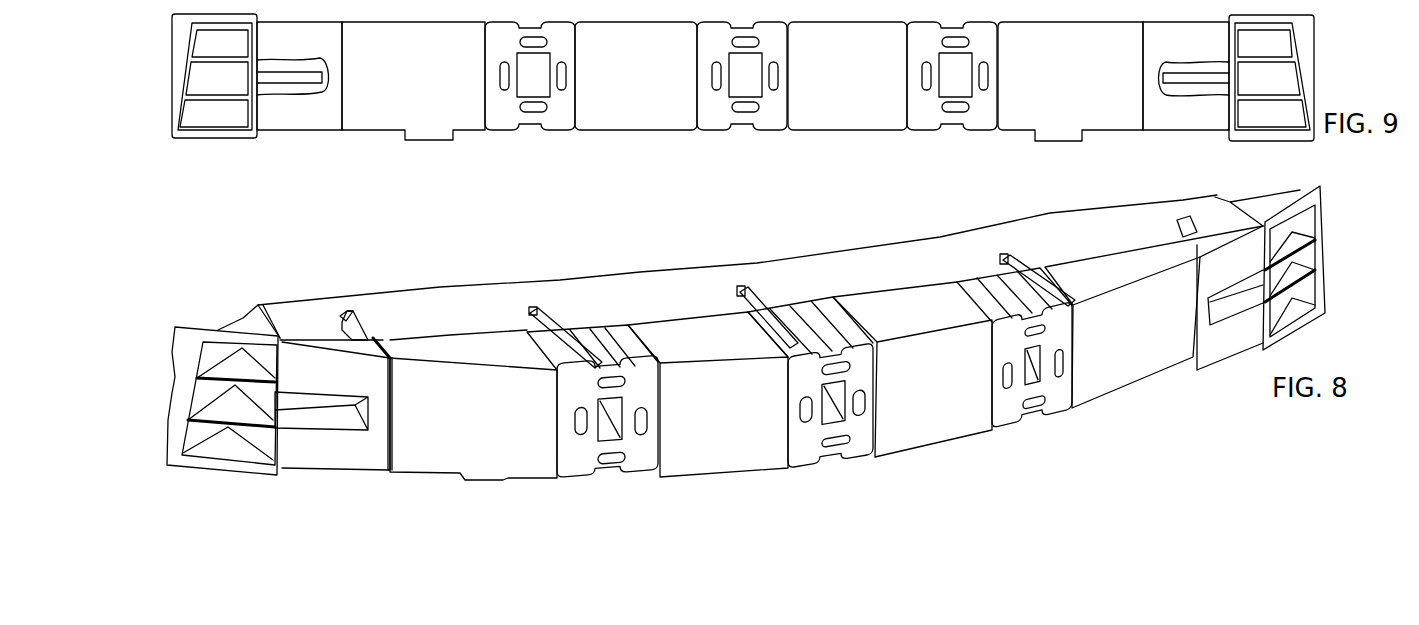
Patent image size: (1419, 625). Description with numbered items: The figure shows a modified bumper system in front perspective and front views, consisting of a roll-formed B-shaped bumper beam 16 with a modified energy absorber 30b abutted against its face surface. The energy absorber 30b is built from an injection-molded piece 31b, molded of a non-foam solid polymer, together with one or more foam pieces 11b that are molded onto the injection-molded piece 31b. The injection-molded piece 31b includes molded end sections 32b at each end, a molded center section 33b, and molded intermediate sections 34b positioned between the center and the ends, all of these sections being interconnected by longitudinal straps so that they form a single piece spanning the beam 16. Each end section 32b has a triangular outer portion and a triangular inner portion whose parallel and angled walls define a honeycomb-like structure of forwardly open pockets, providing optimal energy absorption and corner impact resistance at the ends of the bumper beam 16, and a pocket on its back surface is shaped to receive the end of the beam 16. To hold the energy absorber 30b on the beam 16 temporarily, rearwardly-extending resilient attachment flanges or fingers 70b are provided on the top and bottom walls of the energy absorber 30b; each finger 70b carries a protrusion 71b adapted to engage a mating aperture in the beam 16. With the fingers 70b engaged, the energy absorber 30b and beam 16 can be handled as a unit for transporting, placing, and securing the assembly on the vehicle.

In FIG. 9, the foam pieces 11b is at (382, 122).
In FIG. 8, the foam pieces 11b is at (427, 477).
In FIG. 8, the bumper beam 16 is at (517, 275).
In FIG. 9, the energy absorber 30b is at (506, 148).
In FIG. 8, the energy absorber 30b is at (701, 295).
In FIG. 8, the injection-molded piece 31b is at (1032, 260).
In FIG. 9, the end sections 32b is at (276, 135).
In FIG. 8, the end sections 32b is at (240, 320).
In FIG. 9, the center section 33b is at (752, 133).
In FIG. 8, the center section 33b is at (813, 300).
In FIG. 9, the intermediate sections 34b is at (543, 133).
In FIG. 8, the intermediate sections 34b is at (606, 323).
In FIG. 8, the attachment fingers 70b is at (372, 296).
In FIG. 8, the protrusion 71b is at (340, 325).